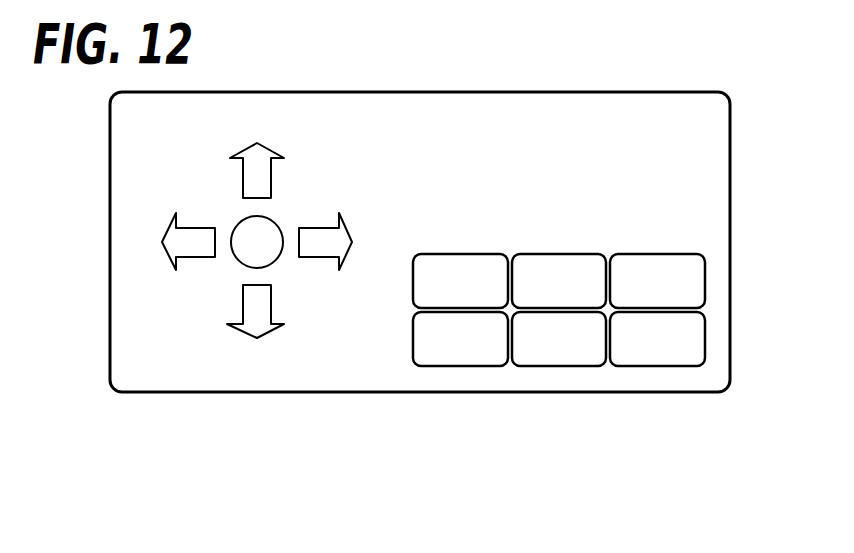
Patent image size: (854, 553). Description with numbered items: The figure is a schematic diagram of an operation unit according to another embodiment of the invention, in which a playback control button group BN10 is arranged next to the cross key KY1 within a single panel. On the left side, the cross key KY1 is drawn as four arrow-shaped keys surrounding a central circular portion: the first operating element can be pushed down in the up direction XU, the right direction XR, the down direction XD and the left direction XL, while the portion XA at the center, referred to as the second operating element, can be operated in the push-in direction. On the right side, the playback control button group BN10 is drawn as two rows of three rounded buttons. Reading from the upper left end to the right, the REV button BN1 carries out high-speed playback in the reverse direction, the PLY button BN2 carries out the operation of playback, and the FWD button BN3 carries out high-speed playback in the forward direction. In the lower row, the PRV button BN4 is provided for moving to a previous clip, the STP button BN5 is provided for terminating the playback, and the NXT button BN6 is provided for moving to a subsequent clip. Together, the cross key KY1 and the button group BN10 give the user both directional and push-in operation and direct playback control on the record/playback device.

The cross key KY1 is at (207, 292).
The up direction XU is at (257, 170).
The down direction XD is at (255, 311).
The left direction XL is at (188, 241).
The right direction XR is at (325, 241).
The portion of the cross key XA is at (257, 242).
The REV button BN1 is at (439, 253).
The PLY button BN2 is at (537, 253).
The FWD button BN3 is at (635, 253).
The PRV button BN4 is at (438, 367).
The STP button BN5 is at (538, 367).
The NXT button BN6 is at (637, 367).
The playback control button group BN10 is at (713, 357).